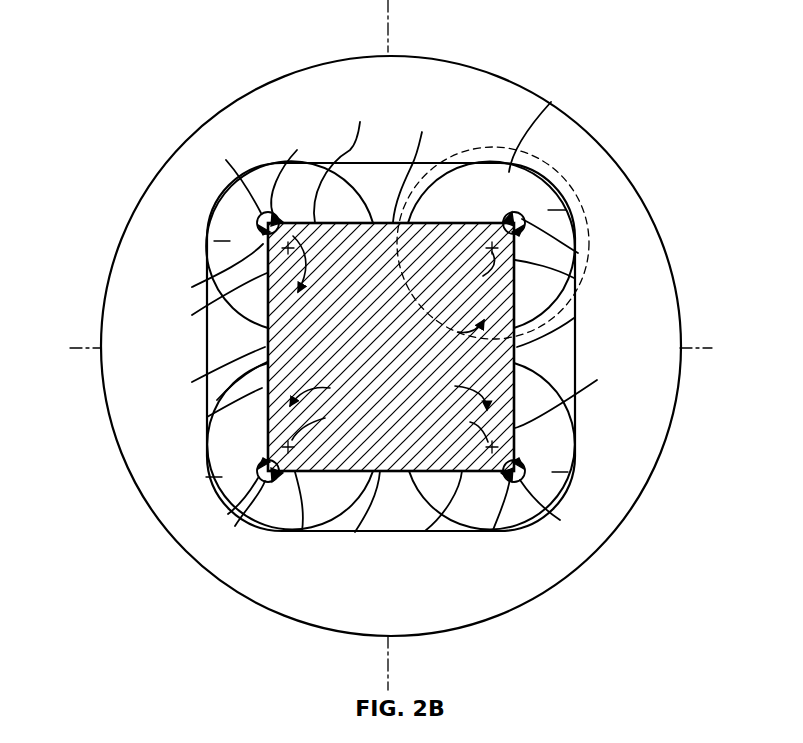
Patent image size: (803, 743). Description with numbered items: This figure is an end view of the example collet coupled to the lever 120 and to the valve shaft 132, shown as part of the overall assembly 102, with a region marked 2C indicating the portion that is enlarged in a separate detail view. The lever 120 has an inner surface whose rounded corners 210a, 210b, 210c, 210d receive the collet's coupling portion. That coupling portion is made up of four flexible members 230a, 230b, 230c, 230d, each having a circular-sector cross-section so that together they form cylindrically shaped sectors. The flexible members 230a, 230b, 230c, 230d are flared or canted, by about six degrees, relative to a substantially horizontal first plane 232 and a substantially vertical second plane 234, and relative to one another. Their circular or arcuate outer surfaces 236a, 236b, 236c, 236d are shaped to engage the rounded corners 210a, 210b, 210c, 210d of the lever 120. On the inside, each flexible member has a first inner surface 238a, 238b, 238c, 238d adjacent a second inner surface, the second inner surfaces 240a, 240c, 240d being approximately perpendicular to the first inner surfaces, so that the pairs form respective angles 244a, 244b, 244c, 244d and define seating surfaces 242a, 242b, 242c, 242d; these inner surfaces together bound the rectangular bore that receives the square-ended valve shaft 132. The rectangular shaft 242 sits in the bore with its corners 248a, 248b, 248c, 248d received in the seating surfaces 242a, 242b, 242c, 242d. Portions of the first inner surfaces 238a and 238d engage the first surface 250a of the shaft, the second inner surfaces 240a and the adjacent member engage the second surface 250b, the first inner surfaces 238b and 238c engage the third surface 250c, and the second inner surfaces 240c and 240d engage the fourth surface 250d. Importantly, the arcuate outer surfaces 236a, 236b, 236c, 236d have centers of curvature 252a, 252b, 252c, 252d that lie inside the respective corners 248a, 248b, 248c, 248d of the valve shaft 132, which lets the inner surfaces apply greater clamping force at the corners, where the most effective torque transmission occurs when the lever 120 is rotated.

The motor assembly 102 is at (132, 38).
The lever 120 is at (421, 57).
The valve shaft 132 is at (192, 315).
The detail view region 2C is at (467, 152).
The rounded corner 210a is at (222, 203).
The rounded corner 210b is at (540, 192).
The rounded corner 210c is at (560, 458).
The rounded corner 210d is at (214, 497).
The flexible member 230a is at (222, 241).
The flexible member 230b is at (560, 211).
The flexible member 230c is at (560, 472).
The flexible member 230d is at (214, 477).
The first plane 232 is at (692, 344).
The second plane 234 is at (386, 18).
The arcuate outer surface 236a is at (226, 160).
The arcuate outer surface 236b is at (551, 102).
The arcuate outer surface 236c is at (560, 520).
The arcuate outer surface 236d is at (228, 514).
The first inner surface 238a is at (192, 287).
The first inner surface 238b is at (574, 278).
The first inner surface 238c is at (597, 380).
The first inner surface 238d is at (207, 417).
The second inner surface 240a is at (360, 122).
The second inner surface 240c is at (425, 531).
The second inner surface 240d is at (302, 531).
The magnet 242 is at (391, 347).
The seating surface 242a is at (301, 291).
The seating surface 242b is at (458, 333).
The seating surface 242c is at (443, 393).
The seating surface 242d is at (336, 392).
The angle 244a is at (297, 150).
The angle 244b is at (578, 253).
The angle 244c is at (493, 530).
The angle 244d is at (235, 526).
The corner 248a is at (294, 248).
The corner 248b is at (486, 248).
The corner 248c is at (486, 447).
The corner 248d is at (294, 447).
The first surface 250a is at (192, 382).
The second surface 250b is at (419, 163).
The third surface 250c is at (574, 318).
The fourth surface 250d is at (355, 532).
The center of curvature 252a is at (301, 267).
The center of curvature 252b is at (483, 275).
The center of curvature 252c is at (470, 422).
The center of curvature 252d is at (325, 418).